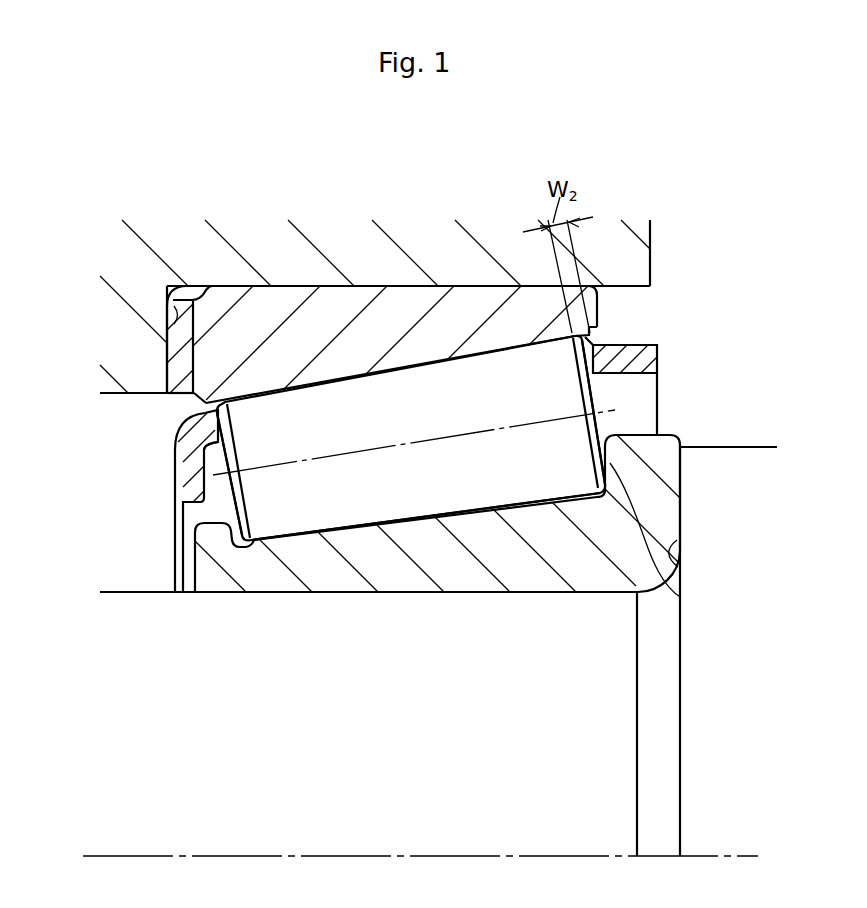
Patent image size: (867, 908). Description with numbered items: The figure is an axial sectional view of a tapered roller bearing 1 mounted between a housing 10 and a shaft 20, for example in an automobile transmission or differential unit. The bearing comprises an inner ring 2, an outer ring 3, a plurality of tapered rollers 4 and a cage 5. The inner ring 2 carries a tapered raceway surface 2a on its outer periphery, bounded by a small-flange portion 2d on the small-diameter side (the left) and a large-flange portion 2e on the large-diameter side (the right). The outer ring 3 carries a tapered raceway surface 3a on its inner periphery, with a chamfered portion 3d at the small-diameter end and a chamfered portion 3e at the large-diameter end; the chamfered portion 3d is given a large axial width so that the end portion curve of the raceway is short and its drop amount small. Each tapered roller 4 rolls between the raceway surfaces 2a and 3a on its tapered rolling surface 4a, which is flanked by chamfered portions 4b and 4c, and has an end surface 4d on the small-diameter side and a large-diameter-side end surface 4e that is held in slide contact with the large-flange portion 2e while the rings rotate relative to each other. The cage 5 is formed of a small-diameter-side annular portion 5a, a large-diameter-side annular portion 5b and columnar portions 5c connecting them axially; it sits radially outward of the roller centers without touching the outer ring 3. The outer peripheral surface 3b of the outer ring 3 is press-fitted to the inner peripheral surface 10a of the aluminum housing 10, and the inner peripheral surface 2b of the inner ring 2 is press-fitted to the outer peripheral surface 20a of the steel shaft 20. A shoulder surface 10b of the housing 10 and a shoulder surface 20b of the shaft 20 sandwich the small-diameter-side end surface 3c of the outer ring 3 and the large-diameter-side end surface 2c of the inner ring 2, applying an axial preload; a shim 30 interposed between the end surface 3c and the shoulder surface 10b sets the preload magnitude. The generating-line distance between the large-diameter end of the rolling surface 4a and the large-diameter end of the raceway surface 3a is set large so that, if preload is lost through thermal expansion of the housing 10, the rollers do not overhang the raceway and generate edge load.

The tapered roller bearing 1 is at (405, 416).
The inner ring 2 is at (429, 543).
The raceway surface 2a is at (468, 507).
The inner peripheral surface 2b is at (396, 592).
The end surface 2c is at (680, 502).
The small-flange portion 2d is at (212, 532).
The large-flange portion 2e is at (643, 463).
The outer ring 3 is at (376, 305).
The raceway surface 3a is at (372, 372).
The outer peripheral surface 3b is at (422, 284).
The end surface 3c is at (167, 375).
The chamfered portion 3d is at (197, 402).
The chamfered portion 3e is at (598, 333).
The shim 30 is at (178, 347).
The tapered roller 4 is at (470, 444).
The rolling surface 4a is at (340, 545).
The chamfered portion 4b is at (244, 542).
The chamfered portion 4c is at (601, 500).
The end surface 4d is at (222, 527).
The large-diameter-side end surface 4e is at (682, 597).
The cage 5 is at (416, 464).
The small-diameter-side annular portion 5a is at (176, 438).
The large-diameter-side annular portion 5b is at (627, 367).
The columnar portion 5c is at (198, 470).
The housing 10 is at (377, 287).
The inner peripheral surface 10a is at (467, 287).
The shoulder surface 10b is at (167, 296).
The shaft 20 is at (434, 629).
The outer peripheral surface 20a is at (538, 592).
The shoulder surface 20b is at (663, 573).